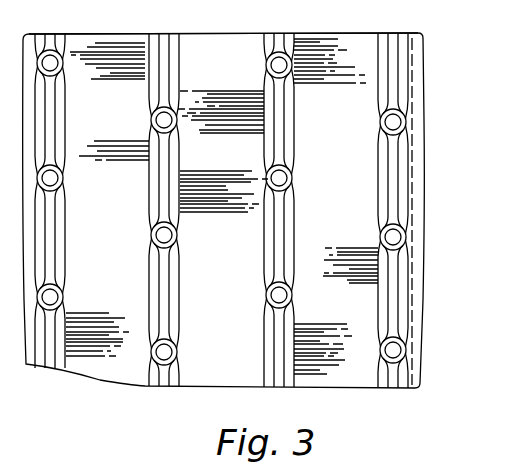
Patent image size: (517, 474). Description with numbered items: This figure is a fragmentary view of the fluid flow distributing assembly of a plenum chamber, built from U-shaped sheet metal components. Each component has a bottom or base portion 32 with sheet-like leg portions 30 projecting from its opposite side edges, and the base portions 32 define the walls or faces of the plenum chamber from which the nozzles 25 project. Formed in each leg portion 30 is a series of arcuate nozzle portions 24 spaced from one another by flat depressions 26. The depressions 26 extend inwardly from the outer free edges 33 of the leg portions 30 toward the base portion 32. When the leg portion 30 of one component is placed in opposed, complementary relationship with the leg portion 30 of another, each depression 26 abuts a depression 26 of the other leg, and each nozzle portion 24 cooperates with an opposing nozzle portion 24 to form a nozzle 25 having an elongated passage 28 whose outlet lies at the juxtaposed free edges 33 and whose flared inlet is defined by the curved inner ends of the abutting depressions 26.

The nozzle portion 24 is at (62, 170).
The nozzle 25 is at (152, 112).
The depression 26 is at (80, 97).
The passage 28 is at (172, 114).
The leg portion 30 is at (180, 273).
The base portion 32 is at (195, 368).
The free edge 33 is at (50, 34).